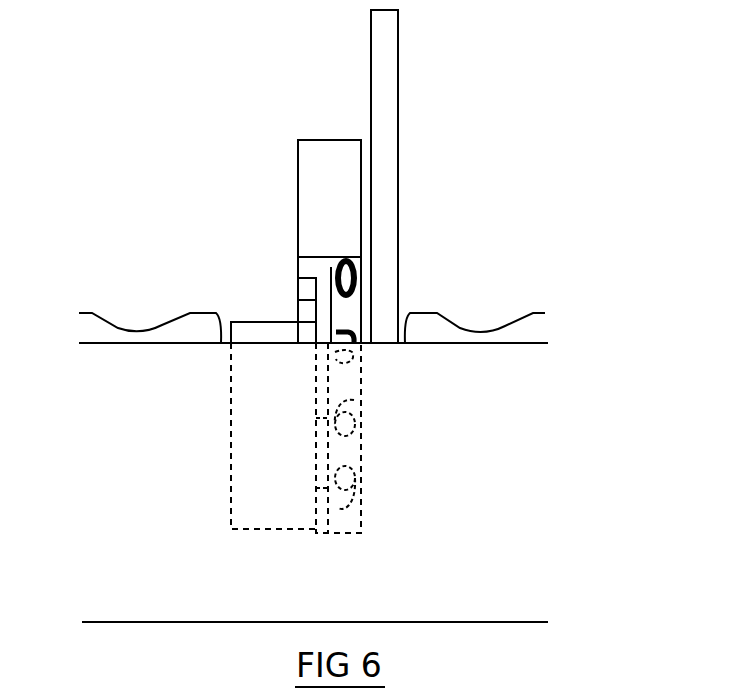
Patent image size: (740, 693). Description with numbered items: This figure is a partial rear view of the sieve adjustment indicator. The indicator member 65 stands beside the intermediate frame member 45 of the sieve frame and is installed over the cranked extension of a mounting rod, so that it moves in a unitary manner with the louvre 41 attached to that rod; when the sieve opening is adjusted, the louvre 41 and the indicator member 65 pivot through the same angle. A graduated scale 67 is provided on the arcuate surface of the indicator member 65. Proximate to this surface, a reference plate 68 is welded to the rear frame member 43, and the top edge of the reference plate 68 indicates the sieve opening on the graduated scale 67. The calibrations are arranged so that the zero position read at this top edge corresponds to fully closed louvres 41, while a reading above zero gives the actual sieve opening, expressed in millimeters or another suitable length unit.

The adjustable louvre 41 is at (540, 330).
The rear frame member 43 is at (442, 612).
The intermediate frame member 45 is at (398, 72).
The indicator member 65 is at (298, 196).
The graduated scale 67 is at (358, 281).
The reference plate 68 is at (270, 322).